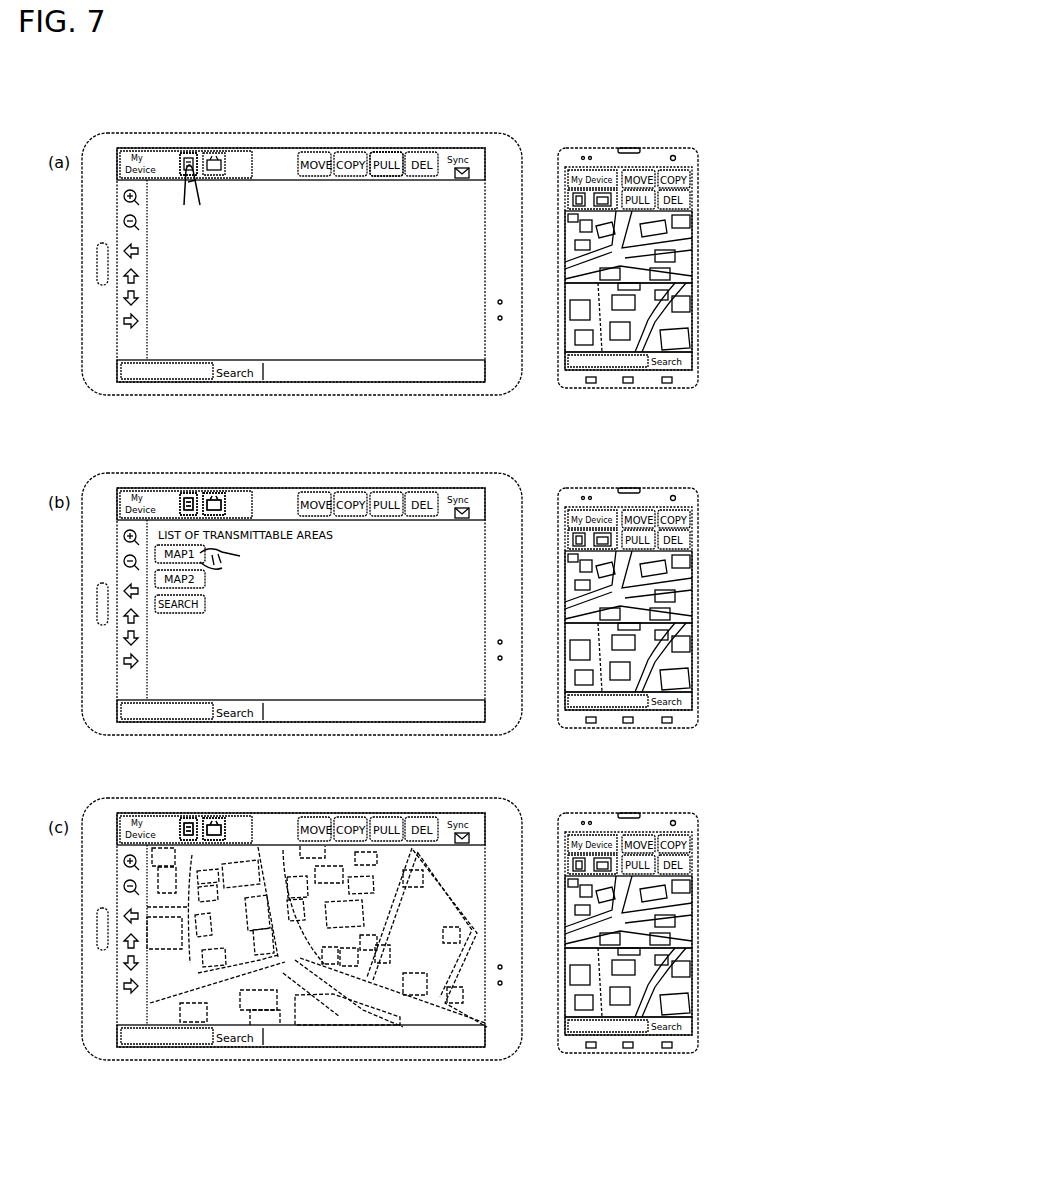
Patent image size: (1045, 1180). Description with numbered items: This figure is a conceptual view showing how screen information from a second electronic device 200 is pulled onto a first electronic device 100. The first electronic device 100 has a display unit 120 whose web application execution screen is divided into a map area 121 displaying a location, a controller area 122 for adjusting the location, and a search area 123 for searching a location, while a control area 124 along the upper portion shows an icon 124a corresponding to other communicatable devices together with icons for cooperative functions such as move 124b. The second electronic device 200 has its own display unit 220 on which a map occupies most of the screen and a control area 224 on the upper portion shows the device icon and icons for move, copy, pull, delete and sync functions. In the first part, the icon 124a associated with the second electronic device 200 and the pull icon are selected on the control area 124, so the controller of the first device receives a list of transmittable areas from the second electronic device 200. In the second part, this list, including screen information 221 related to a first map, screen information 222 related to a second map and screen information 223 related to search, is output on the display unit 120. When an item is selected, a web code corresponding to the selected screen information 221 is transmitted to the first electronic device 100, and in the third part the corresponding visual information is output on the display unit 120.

The first electronic device 100 is at (343, 128).
The display unit 120 is at (275, 147).
The map area 121 is at (445, 225).
The controller area 122 is at (122, 336).
The search area 123 is at (192, 373).
The control area 124 is at (284, 490).
The icon 124a is at (200, 140).
The move icon 124b is at (385, 152).
The second electronic device 200 is at (654, 129).
The display unit 220 is at (686, 167).
The screen information related to a first map 221 is at (578, 253).
The screen information related to a second map 222 is at (578, 315).
The screen information related to search 223 is at (578, 355).
The control area 224 is at (617, 167).